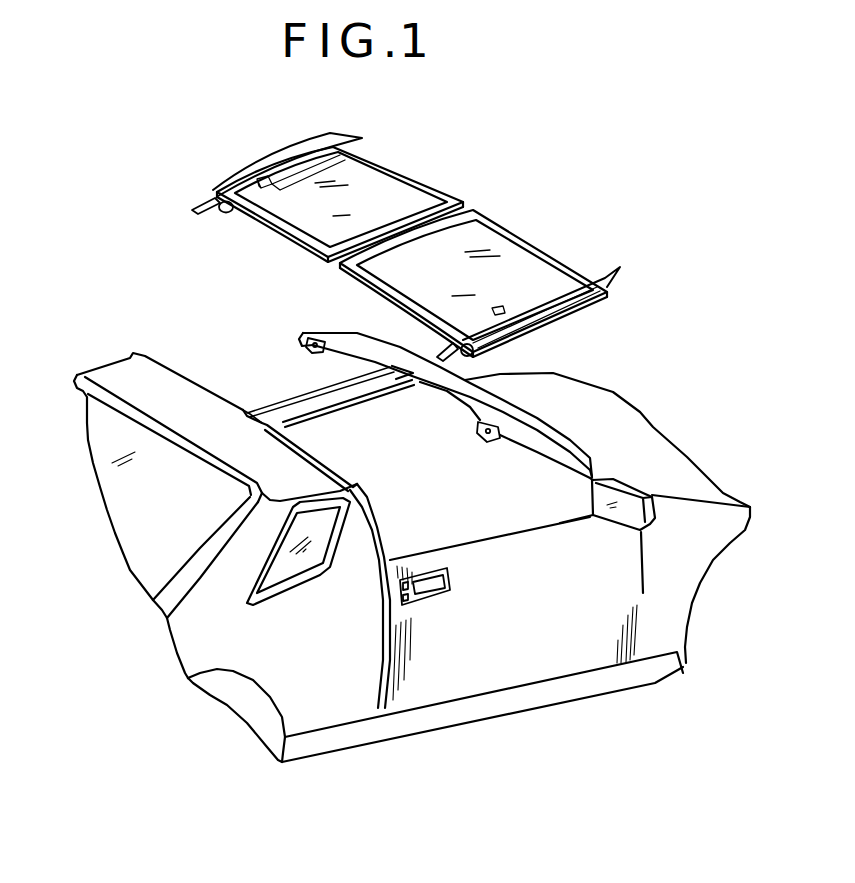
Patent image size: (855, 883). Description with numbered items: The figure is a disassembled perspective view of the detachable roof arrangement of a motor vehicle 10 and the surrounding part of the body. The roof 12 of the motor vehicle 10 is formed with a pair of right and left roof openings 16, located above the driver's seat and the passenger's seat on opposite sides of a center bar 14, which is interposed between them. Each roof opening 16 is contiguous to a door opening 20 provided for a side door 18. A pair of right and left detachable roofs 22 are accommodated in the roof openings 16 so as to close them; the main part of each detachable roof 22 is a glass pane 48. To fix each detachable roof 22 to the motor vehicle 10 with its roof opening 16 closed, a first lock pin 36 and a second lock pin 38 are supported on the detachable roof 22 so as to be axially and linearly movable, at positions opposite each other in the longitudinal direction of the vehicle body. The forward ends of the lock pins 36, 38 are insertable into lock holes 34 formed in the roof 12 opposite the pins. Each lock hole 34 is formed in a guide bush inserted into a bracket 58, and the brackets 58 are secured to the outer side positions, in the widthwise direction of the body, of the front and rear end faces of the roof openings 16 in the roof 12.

The motor vehicle 10 is at (380, 753).
The roof 12 is at (240, 455).
The center bar 14 is at (262, 413).
The roof opening 16 is at (362, 435).
The side door 18 is at (563, 667).
The door opening 20 is at (390, 532).
The detachable roof 22 is at (422, 228).
The lock hole 34 is at (308, 332).
The first lock pin 36 is at (352, 138).
The second lock pin 38 is at (203, 202).
The glass pane 48 is at (295, 207).
The bracket 58 is at (313, 355).